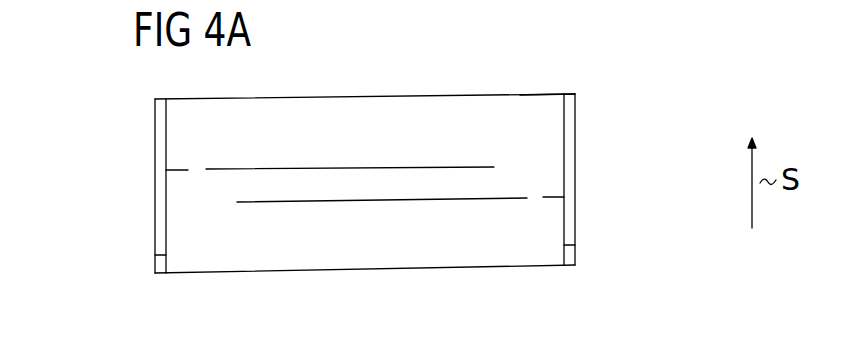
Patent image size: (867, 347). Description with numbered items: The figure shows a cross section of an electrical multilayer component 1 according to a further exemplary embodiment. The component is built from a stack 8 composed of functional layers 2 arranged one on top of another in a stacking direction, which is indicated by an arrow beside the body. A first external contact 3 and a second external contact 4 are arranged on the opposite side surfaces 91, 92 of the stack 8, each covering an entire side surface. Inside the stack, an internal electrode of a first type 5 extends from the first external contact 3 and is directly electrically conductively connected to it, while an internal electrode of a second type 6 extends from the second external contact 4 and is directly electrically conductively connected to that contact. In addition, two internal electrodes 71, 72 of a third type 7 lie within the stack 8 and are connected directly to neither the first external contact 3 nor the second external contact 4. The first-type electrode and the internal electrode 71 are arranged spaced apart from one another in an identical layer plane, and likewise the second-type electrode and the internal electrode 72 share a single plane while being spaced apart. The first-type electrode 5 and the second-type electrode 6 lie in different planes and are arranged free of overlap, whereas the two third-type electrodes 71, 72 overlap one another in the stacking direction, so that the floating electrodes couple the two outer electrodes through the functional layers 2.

The electrical multilayer component 1 is at (518, 66).
The functional layers 2 is at (576, 96).
The first external contact 3 is at (156, 226).
The second external contact 4 is at (577, 266).
The first type 5 is at (178, 170).
The second type 6 is at (557, 198).
The third type 7 is at (642, 110).
The internal electrode of the third type 71 is at (470, 163).
The internal electrode of the third type 72 is at (503, 200).
The stack 8 is at (520, 107).
The side surface 91 is at (158, 257).
The side surface 92 is at (577, 246).